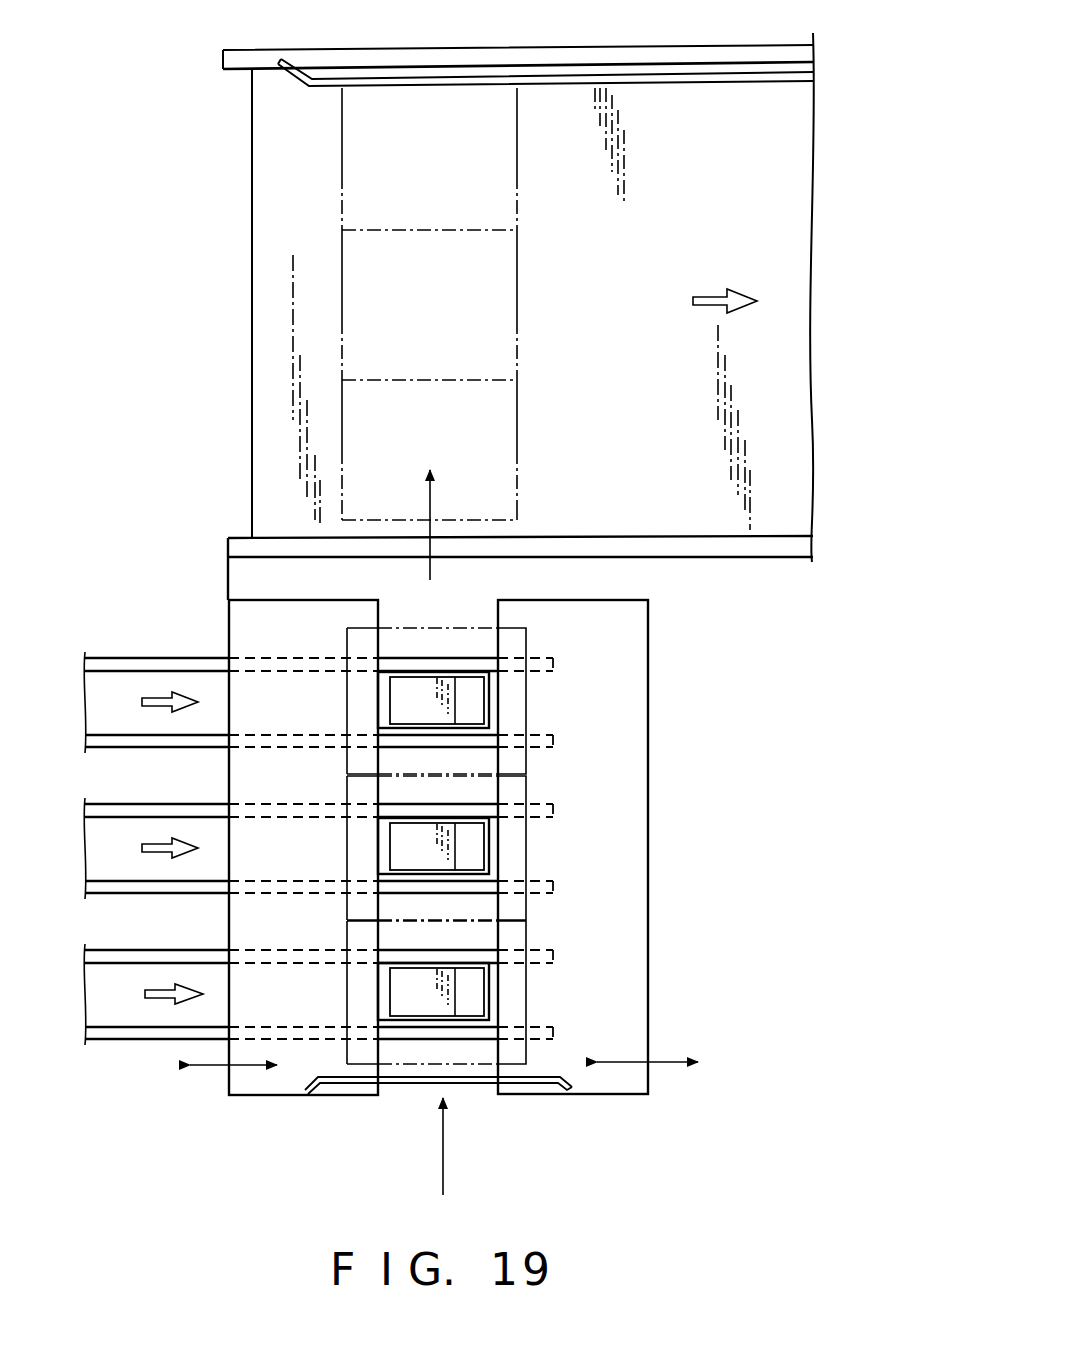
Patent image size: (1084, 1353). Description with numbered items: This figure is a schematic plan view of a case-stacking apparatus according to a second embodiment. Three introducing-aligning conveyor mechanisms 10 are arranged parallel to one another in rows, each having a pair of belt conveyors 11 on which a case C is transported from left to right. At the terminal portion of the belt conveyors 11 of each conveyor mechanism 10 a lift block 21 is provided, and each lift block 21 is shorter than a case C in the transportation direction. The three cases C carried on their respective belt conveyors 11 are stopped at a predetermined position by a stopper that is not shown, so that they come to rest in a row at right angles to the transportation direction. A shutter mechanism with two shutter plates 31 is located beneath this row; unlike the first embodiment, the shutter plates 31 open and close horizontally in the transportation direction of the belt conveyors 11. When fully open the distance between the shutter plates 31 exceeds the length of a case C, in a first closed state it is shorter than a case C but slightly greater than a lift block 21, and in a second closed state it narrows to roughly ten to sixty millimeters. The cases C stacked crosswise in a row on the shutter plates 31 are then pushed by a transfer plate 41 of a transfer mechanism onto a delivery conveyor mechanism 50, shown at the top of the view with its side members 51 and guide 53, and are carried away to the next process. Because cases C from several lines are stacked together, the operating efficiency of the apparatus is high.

The introducing-aligning conveyor mechanism 10 is at (318, 847).
The belt conveyors 11 is at (140, 1036).
The lift block 21 is at (472, 708).
The shutter plates 31 is at (268, 1084).
The transfer plate 41 is at (483, 1089).
The delivery conveyor mechanism 50 is at (589, 44).
The frame member 51 is at (264, 303).
The guide rail 53 is at (665, 88).
The case C is at (520, 272).